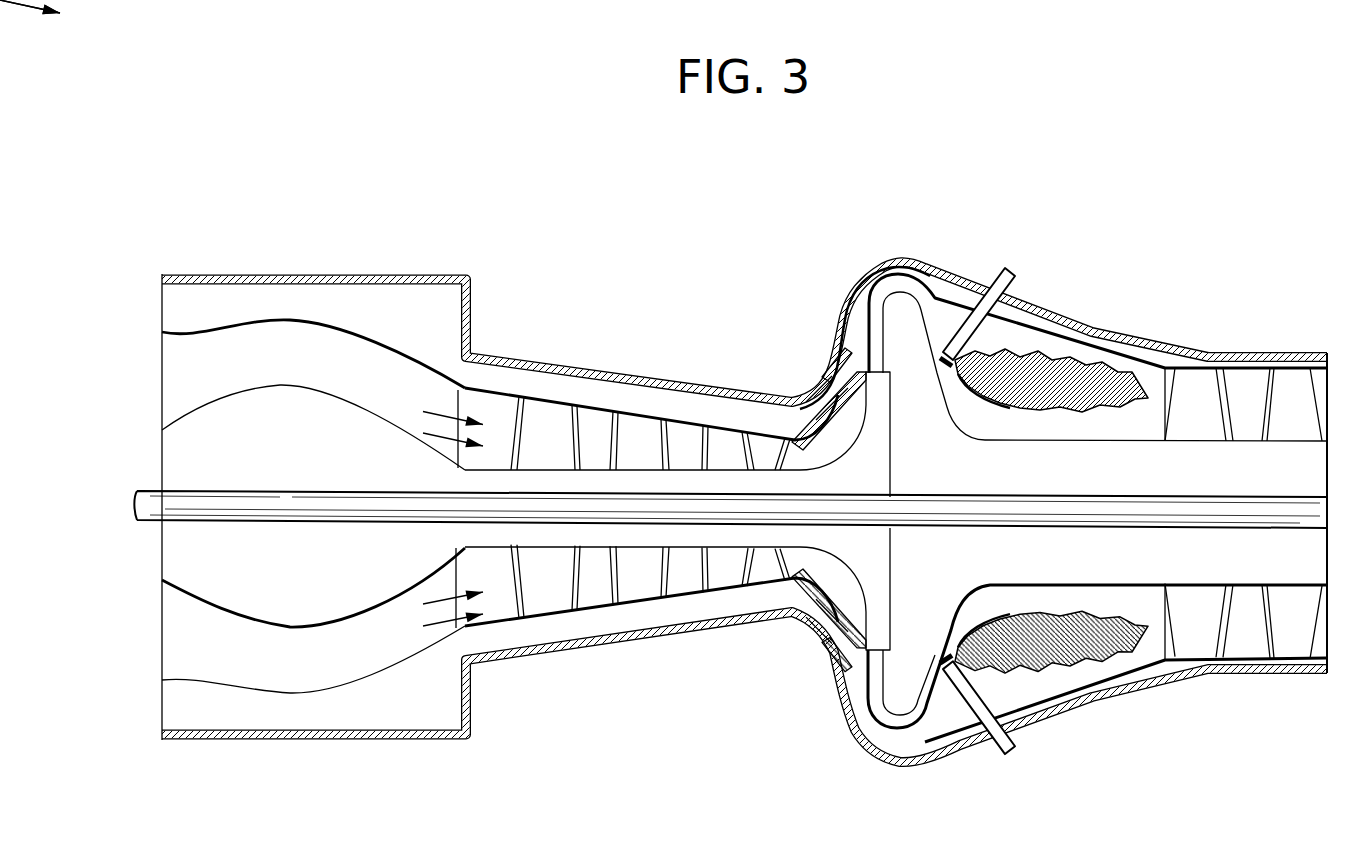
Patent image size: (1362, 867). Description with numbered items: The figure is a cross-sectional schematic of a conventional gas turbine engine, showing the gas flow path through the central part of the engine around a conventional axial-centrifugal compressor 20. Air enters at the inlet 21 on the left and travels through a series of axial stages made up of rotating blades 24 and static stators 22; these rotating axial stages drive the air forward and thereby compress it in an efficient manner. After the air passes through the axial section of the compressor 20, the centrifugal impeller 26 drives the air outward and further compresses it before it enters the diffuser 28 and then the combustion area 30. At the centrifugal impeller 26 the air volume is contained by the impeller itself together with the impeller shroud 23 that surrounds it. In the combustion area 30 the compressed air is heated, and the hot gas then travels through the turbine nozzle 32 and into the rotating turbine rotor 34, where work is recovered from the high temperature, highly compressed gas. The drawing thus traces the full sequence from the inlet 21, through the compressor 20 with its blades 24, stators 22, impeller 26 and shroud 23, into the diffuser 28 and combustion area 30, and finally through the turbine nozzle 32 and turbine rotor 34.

The axial-centrifugal compressor 20 is at (603, 388).
The inlet 21 is at (405, 378).
The static stators 22 is at (687, 437).
The impeller shroud 23 is at (833, 366).
The rotating blades 24 is at (642, 430).
The centrifugal impeller 26 is at (823, 381).
The diffuser 28 is at (906, 284).
The combustion area 30 is at (1020, 377).
The turbine nozzle 32 is at (1250, 385).
The turbine rotor 34 is at (1198, 377).